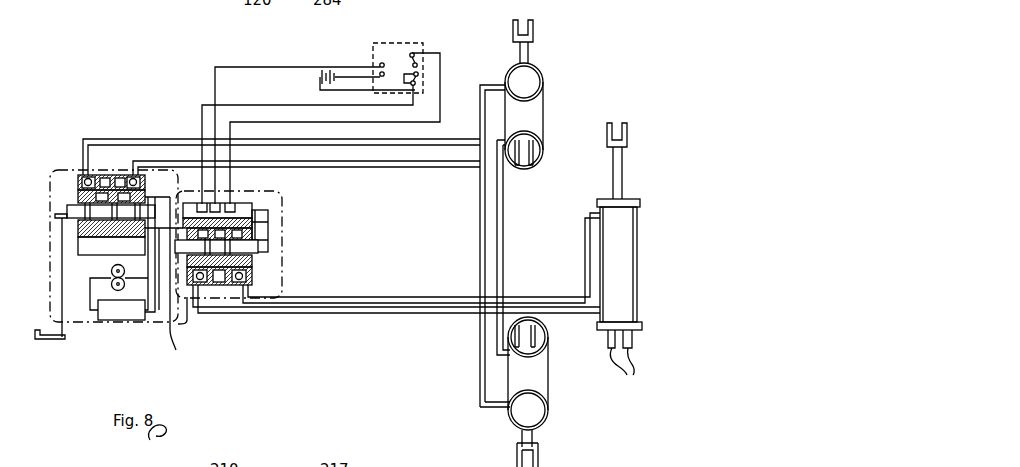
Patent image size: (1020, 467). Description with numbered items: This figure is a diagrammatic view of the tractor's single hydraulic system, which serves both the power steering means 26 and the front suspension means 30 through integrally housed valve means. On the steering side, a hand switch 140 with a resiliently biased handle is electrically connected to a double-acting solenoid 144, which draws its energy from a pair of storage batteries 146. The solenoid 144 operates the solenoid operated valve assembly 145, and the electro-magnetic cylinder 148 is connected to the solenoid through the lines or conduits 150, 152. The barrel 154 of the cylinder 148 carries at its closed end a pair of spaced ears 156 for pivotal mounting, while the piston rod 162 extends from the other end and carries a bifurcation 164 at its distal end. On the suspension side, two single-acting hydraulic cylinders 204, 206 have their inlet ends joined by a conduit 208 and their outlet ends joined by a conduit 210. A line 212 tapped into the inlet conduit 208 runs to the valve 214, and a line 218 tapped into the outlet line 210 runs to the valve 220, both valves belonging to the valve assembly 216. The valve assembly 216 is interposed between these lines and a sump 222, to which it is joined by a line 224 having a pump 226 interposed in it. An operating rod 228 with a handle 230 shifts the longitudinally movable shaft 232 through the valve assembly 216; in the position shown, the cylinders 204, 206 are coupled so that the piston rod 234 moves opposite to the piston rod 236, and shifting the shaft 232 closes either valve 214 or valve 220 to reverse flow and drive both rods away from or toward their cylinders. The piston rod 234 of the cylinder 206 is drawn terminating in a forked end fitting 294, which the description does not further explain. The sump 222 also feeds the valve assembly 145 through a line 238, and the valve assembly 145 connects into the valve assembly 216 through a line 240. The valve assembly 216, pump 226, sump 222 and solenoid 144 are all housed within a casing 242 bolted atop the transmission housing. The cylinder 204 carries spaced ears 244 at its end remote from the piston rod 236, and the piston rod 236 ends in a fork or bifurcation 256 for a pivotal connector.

The hydraulic power steering means 26 is at (585, 208).
The hydraulic suspension means 30 is at (474, 225).
The hand switch 140 is at (422, 43).
The double-acting solenoid 144 is at (265, 222).
The solenoid operated valve assembly 145 is at (255, 268).
The storage batteries 146 is at (328, 70).
The electro-magnetic cylinder 148 is at (643, 282).
The line or conduit 150 is at (258, 297).
The line or conduit 152 is at (228, 315).
The barrel 154 is at (630, 249).
The ears or lugs 156 is at (637, 357).
The piston rod 162 is at (622, 172).
The bifurcation 164 is at (628, 132).
The single-acting hydraulic cylinder 204 is at (540, 382).
The single-acting hydraulic cylinder 206 is at (532, 108).
The inlet line or conduit 208 is at (480, 178).
The outlet line or conduit 210 is at (502, 245).
The line or conduit 212 is at (160, 139).
The valve 214 is at (75, 173).
The valve assembly 216 is at (70, 228).
The line or conduit 218 is at (368, 166).
The valve 220 is at (205, 146).
The sump 222 is at (110, 320).
The line or conduit 224 is at (88, 283).
The pump 226 is at (110, 267).
The operating rod 228 is at (60, 263).
The handle 230 is at (42, 339).
The shaft 232 is at (72, 204).
The piston rod 234 is at (520, 53).
The piston rod 236 is at (525, 440).
The line or conduit 238 is at (182, 283).
The line or conduit 240 is at (170, 203).
The casing 242 is at (130, 328).
The ears 244 is at (538, 333).
The fork or bifurcation 256 is at (540, 458).
The clevis 294 is at (537, 32).